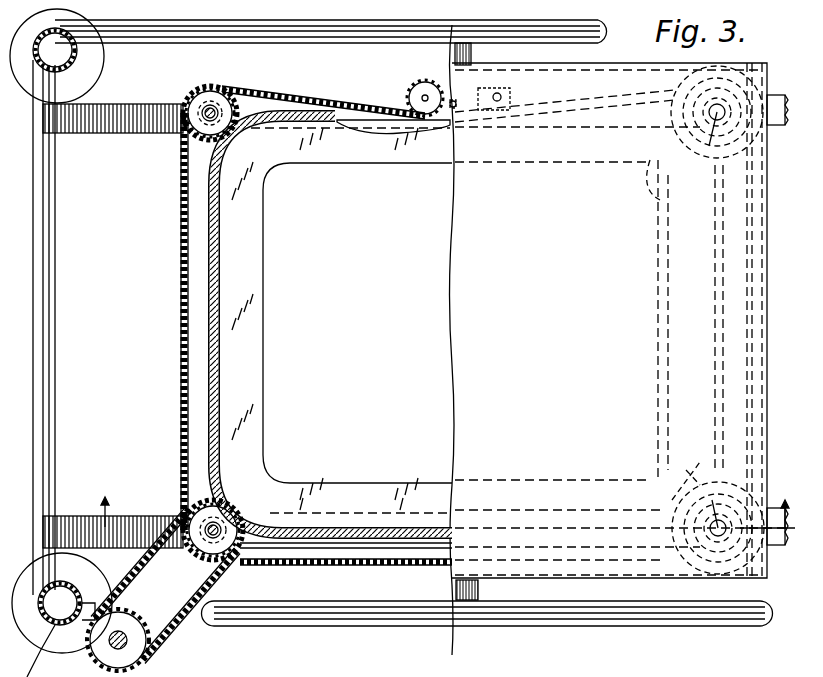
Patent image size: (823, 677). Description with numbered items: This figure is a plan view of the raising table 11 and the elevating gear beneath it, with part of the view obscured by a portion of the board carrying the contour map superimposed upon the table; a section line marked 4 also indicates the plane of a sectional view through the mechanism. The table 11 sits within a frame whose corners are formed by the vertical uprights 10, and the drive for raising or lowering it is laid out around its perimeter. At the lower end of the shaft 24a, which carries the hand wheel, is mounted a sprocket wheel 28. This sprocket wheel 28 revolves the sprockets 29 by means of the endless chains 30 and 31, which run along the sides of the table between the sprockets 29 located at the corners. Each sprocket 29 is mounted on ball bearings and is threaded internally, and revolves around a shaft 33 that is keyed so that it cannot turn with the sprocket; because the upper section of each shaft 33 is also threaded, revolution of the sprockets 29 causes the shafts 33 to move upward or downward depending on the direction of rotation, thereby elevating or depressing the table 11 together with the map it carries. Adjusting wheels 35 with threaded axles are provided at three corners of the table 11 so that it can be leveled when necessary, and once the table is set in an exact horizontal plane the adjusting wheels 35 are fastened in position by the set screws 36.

The vertical uprights 10 is at (78, 64).
The raising table 11 is at (468, 321).
The shaft 24a is at (126, 636).
The sprocket wheel 28 is at (165, 637).
The sprockets 29 is at (205, 128).
The endless chain 30 is at (222, 580).
The endless chain 31 is at (305, 100).
The shafts 33 is at (215, 120).
The adjusting wheels 35 is at (668, 450).
The set screws 36 is at (740, 676).
The section line 4- 4 is at (445, 498).